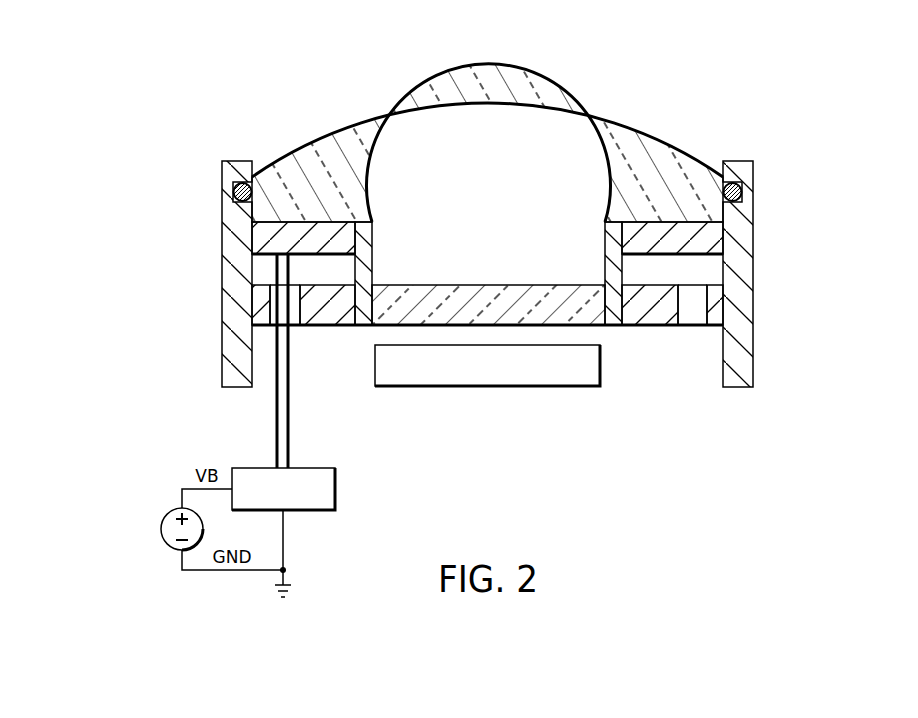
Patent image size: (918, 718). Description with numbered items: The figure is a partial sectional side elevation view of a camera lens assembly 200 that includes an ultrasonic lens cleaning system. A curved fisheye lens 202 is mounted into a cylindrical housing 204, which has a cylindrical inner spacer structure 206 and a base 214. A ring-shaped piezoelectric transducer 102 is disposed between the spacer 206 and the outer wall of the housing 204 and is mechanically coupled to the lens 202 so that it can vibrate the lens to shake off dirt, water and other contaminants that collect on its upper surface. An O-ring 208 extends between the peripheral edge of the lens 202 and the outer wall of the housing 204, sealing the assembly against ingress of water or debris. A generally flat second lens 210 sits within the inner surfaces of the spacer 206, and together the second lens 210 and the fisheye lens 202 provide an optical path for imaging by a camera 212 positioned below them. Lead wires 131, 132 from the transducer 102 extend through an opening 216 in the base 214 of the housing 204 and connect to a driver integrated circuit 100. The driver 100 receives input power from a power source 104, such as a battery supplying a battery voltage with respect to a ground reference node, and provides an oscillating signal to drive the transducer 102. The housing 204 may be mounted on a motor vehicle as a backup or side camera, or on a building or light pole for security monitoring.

The camera lens assembly 200 is at (722, 68).
The lens 202 is at (585, 124).
The O-ring 208 is at (232, 192).
The ring transducer 102 is at (258, 230).
The housing 204 is at (233, 291).
The base 214 is at (258, 311).
The inner spacer structure 206 is at (364, 258).
The second lens 210 is at (489, 290).
The opening 216 is at (293, 318).
The camera 212 is at (498, 388).
The lead wire 131 is at (276, 408).
The lead wire 132 is at (291, 437).
The driver integrated circuit 100 is at (337, 497).
The power source 104 is at (161, 529).